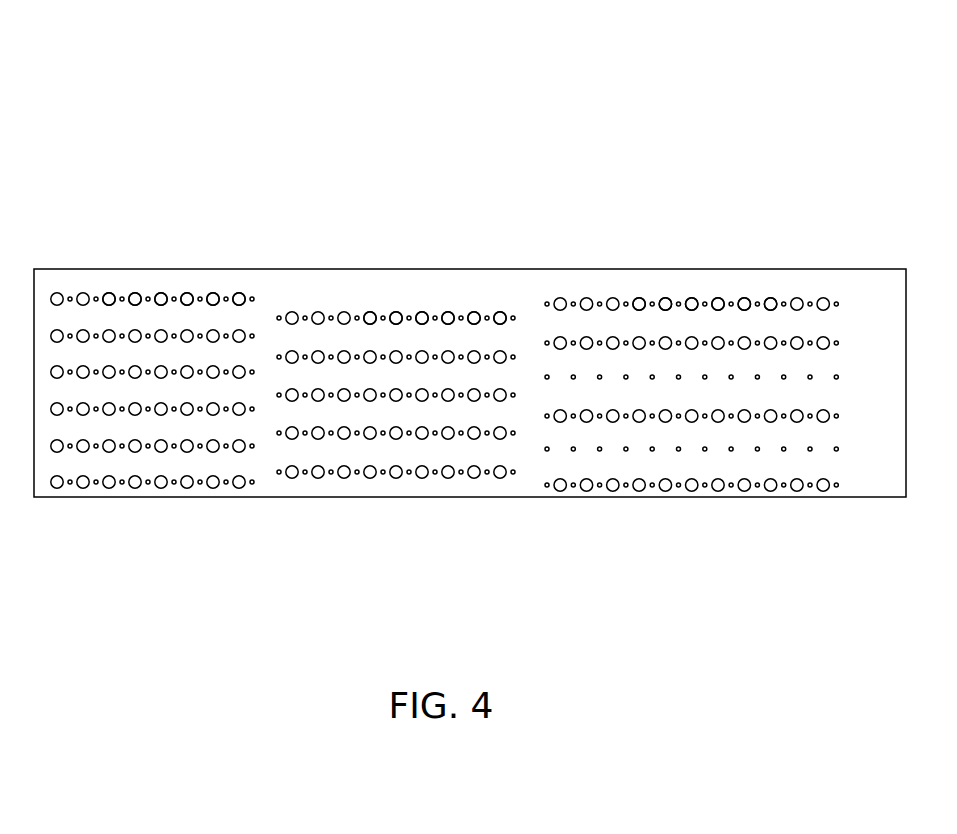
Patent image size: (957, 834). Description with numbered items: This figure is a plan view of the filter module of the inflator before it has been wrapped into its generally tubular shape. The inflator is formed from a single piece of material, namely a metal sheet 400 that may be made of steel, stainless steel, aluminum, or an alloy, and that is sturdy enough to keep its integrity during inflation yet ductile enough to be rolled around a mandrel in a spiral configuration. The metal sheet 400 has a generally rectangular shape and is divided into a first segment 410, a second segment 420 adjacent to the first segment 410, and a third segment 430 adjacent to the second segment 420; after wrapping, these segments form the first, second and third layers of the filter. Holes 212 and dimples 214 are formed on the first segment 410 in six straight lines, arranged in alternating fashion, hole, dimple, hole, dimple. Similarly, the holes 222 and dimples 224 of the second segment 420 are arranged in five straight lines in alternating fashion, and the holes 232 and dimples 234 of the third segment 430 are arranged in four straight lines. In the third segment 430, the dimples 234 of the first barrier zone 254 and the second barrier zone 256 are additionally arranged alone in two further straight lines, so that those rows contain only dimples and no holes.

The metal sheet 400 is at (616, 82).
The first segment 410 is at (265, 503).
The second segment 420 is at (525, 505).
The third segment 430 is at (535, 505).
The holes 212 is at (108, 292).
The dimples 214 is at (178, 293).
The holes 222 is at (366, 311).
The dimples 224 is at (440, 312).
The holes 232 is at (636, 298).
The dimples 234 is at (763, 298).
The first barrier zone 254 is at (825, 450).
The second barrier zone 256 is at (825, 378).